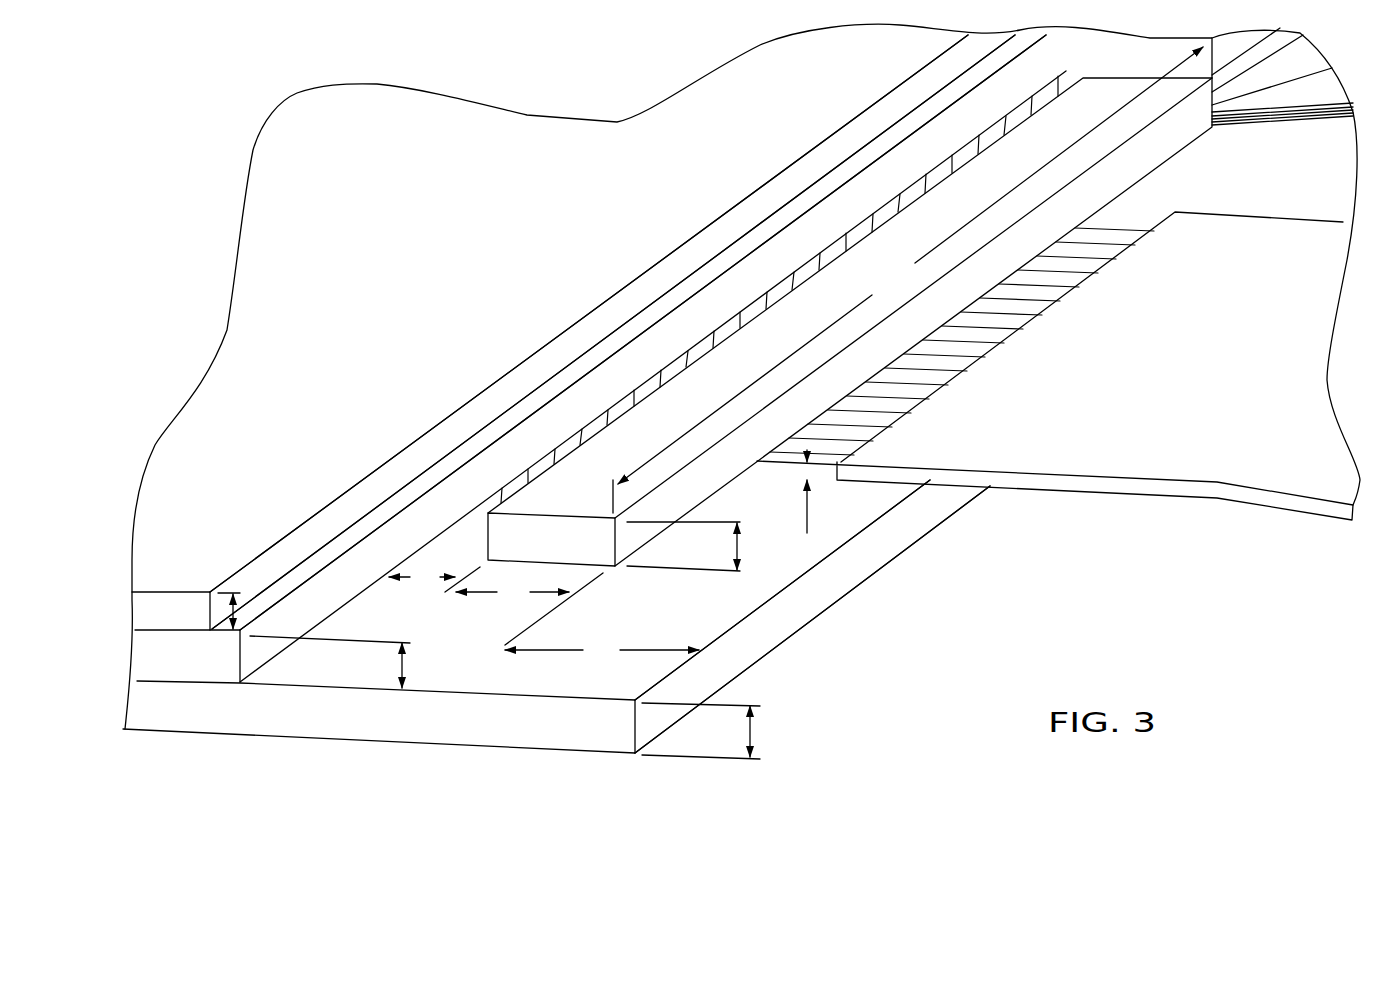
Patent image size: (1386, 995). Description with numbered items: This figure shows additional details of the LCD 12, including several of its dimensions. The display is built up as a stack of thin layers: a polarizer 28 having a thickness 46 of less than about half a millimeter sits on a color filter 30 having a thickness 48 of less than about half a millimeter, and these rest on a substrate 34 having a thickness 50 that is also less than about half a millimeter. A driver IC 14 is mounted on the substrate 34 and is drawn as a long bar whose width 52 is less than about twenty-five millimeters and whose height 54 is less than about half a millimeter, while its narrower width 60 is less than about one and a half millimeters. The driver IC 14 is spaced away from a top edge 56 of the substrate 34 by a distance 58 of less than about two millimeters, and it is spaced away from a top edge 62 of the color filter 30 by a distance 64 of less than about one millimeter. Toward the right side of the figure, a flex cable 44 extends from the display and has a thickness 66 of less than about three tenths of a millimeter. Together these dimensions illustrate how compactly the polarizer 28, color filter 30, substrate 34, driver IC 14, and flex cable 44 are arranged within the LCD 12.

The LCD 12 is at (363, 187).
The driver IC 14 is at (607, 453).
The polarizer 28 is at (197, 605).
The color filter 30 is at (179, 659).
The substrate 34 is at (325, 720).
The flex cable 44 is at (1140, 467).
The thickness of the polarizer 46 is at (228, 612).
The thickness of the color filter 48 is at (407, 665).
The thickness of the substrate 50 is at (757, 731).
The width of the driver IC 52 is at (912, 275).
The height of the driver IC 54 is at (743, 546).
The top edge of the substrate 56 is at (797, 612).
The distance from the top edge of the substrate 58 is at (602, 651).
The width of the driver IC 60 is at (529, 609).
The top edge of the color filter 62 is at (370, 558).
The distance from the top edge of the color filter 64 is at (434, 578).
The thickness of the flex cable 66 is at (812, 490).